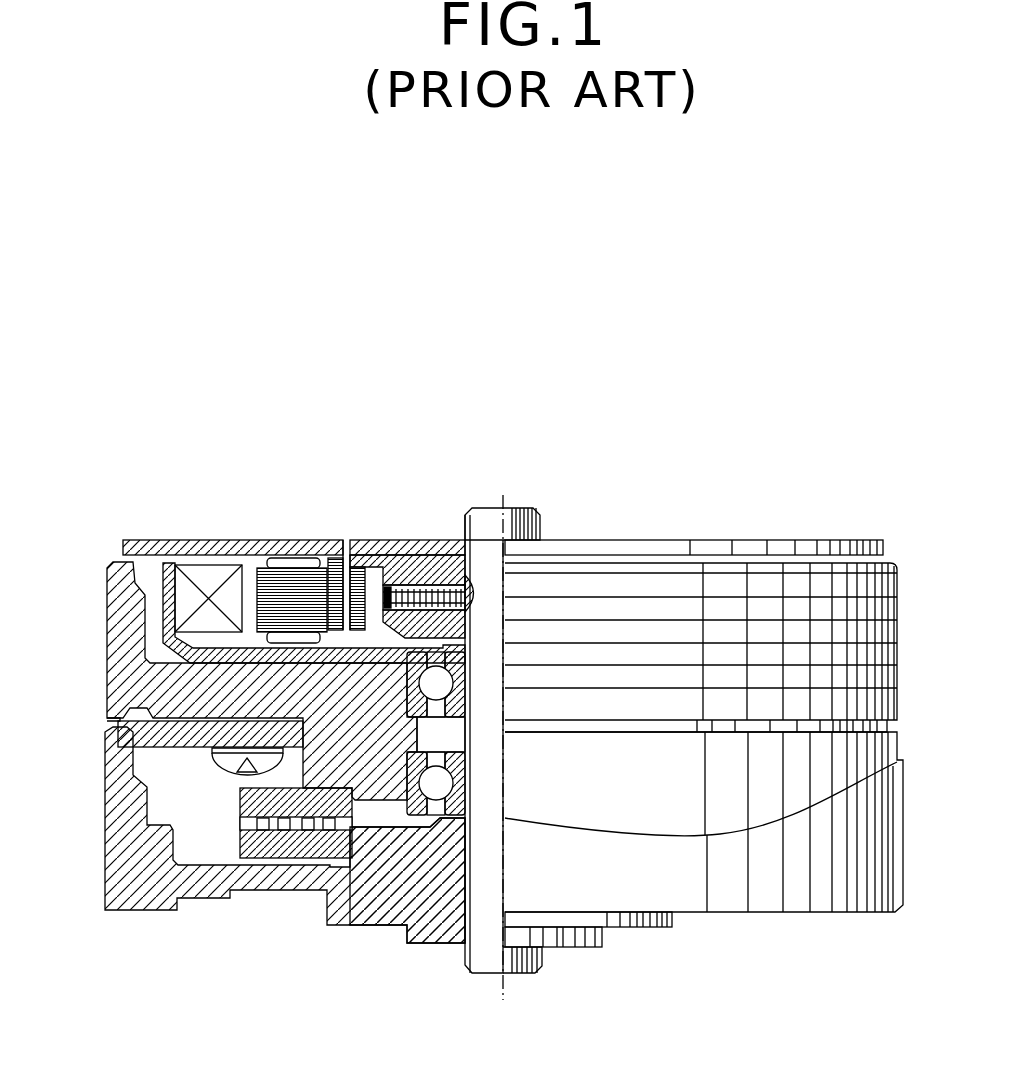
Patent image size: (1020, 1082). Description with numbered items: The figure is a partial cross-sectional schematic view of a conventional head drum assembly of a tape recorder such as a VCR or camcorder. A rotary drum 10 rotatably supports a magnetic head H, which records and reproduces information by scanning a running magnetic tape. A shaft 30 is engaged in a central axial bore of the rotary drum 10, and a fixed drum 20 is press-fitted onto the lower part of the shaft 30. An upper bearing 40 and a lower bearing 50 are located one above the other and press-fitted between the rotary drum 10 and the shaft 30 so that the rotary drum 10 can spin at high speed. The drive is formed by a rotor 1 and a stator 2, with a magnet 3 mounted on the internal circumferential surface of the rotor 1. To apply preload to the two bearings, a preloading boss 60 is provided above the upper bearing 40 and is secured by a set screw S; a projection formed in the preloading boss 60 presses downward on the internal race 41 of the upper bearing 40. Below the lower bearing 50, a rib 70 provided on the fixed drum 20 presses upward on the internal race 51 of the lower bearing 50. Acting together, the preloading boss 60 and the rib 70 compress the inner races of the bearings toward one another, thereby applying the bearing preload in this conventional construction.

The rotor 1 is at (172, 618).
The stator 2 is at (272, 595).
The magnet 3 is at (205, 580).
The rotary drum 10 is at (128, 585).
The fixed drum 20 is at (107, 826).
The shaft 30 is at (487, 512).
The upper bearing 40 is at (341, 560).
The internal race 41 is at (457, 690).
The lower bearing 50 is at (407, 816).
The internal race 51 is at (462, 778).
The preloading boss 60 is at (398, 568).
The rib 70 is at (440, 822).
The set screw S is at (430, 587).
The magnetic head H is at (107, 720).